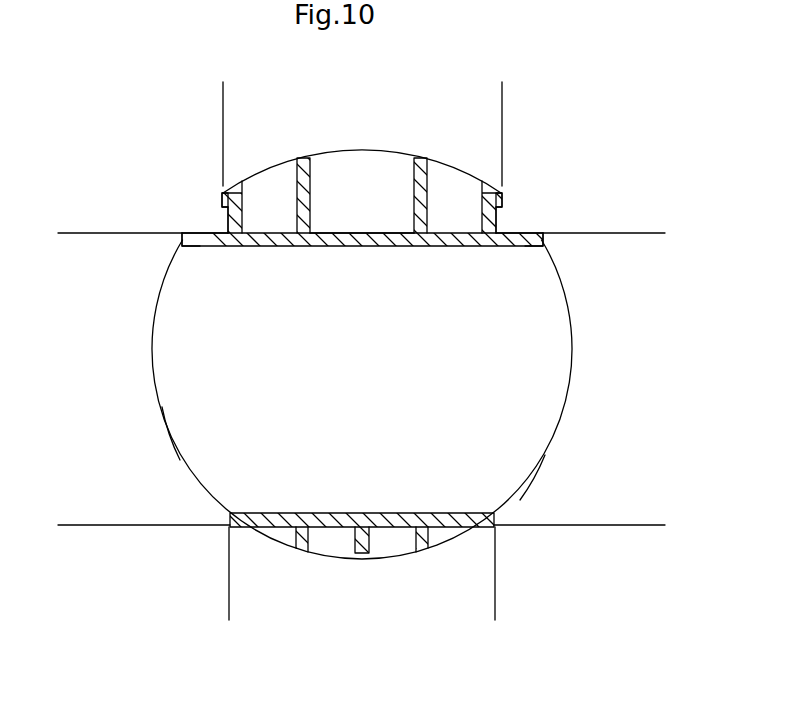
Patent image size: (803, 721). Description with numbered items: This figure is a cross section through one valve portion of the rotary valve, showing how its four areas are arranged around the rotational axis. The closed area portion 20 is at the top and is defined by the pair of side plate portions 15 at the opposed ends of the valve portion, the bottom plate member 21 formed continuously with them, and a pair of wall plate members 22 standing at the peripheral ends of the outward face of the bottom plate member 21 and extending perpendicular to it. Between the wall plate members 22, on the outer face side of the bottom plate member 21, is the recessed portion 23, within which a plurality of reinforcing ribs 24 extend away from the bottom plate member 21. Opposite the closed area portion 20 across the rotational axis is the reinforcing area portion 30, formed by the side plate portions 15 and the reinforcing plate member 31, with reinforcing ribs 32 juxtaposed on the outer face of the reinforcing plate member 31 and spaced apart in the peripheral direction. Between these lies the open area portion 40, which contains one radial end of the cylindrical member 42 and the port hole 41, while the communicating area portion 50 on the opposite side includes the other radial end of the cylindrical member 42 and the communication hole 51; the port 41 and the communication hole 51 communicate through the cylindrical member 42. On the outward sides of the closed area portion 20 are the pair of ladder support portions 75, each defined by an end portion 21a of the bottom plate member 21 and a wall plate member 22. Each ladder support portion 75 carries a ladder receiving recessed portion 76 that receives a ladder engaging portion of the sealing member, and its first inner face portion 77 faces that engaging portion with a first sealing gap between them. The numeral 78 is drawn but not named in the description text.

The side plate portion 15 is at (397, 149).
The closed area portion 20 is at (502, 92).
The bottom plate member 21 is at (358, 247).
The end portion of the bottom plate member 21a is at (205, 247).
The wall plate member 22 is at (244, 206).
The recessed portion 23 is at (330, 175).
The reinforcing rib 24 is at (414, 213).
The reinforcing area portion 30 is at (495, 609).
The reinforcing plate member 31 is at (337, 513).
The reinforcing rib 32 is at (300, 538).
The open area portion 40 is at (71, 233).
The port hole 41 is at (162, 407).
The cylindrical member 42 is at (518, 402).
The communicating area portion 50 is at (653, 233).
The communication hole 51 is at (545, 455).
The ladder support portion 75 is at (365, 250).
The ladder receiving recessed portion 76 is at (228, 223).
The first inner face portion 77 is at (193, 231).
The notch 78 is at (223, 207).